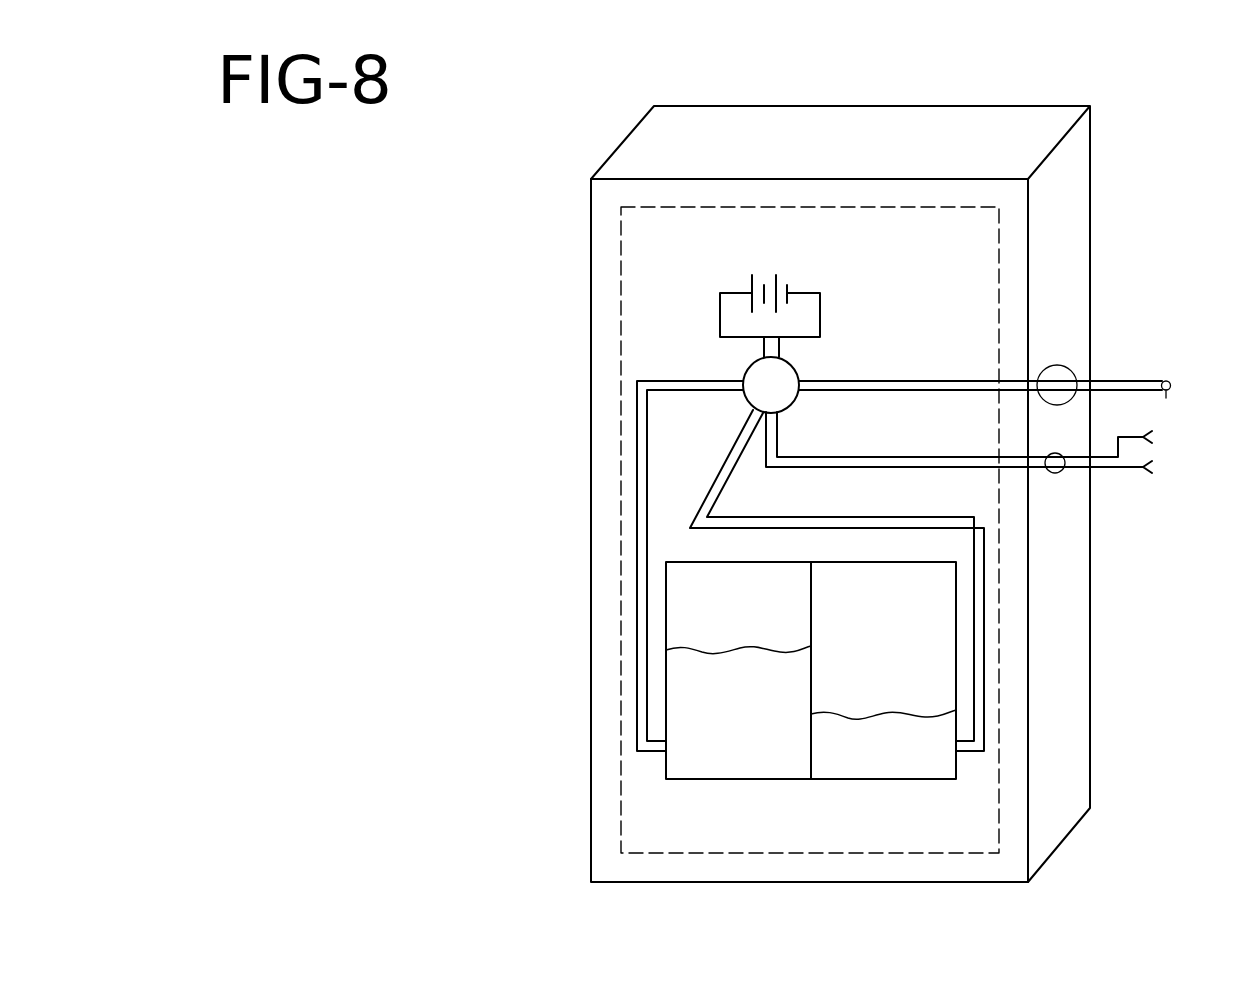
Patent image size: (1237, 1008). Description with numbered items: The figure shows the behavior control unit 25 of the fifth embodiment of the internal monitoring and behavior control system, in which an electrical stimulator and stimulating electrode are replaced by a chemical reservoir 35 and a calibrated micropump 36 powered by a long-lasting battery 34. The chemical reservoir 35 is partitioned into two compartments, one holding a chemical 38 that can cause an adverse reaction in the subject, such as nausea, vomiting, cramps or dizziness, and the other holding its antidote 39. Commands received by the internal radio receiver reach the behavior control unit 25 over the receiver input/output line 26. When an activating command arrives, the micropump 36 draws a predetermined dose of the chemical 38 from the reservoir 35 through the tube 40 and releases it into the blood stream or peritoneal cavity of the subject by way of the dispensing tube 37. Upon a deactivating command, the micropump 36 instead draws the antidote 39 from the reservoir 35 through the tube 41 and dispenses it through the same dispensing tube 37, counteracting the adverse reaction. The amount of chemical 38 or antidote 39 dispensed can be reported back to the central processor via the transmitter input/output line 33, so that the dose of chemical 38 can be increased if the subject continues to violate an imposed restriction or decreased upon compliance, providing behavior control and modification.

The behavior control unit 25 is at (1040, 145).
The receiver input/output line 26 is at (985, 434).
The transmitter input/output line 33 is at (980, 446).
The battery 34 is at (752, 280).
The chemical reservoir 35 is at (932, 664).
The micropump 36 is at (746, 370).
The dispensing tube 37 is at (1142, 379).
The chemical 38 is at (700, 758).
The antidote 39 is at (898, 760).
The tube 40 is at (637, 607).
The tube 41 is at (985, 598).